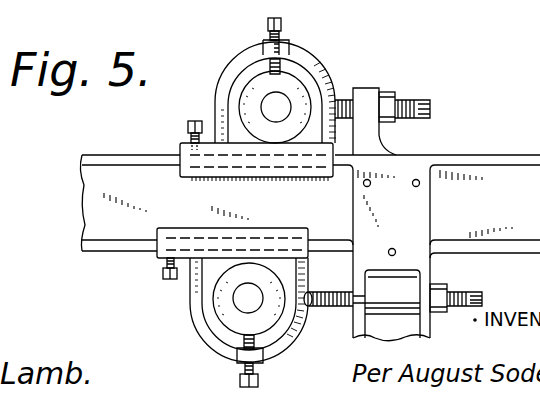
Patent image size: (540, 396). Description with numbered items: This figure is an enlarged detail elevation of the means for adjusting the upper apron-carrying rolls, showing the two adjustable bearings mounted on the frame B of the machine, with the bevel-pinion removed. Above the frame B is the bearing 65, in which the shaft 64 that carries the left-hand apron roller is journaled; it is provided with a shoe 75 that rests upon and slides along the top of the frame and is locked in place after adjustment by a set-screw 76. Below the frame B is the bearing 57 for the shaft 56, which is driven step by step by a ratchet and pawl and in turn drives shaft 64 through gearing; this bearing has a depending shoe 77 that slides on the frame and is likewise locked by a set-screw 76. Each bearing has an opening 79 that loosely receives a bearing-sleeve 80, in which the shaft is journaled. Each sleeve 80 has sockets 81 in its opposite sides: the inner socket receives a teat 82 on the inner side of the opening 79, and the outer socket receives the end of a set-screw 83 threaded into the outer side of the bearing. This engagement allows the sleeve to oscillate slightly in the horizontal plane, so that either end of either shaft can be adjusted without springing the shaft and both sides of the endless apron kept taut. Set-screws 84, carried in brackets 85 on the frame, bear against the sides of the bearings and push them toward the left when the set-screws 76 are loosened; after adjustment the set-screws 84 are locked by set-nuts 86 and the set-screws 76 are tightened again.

The beam B is at (270, 170).
The shoe 75 is at (192, 172).
The shoe 77 is at (158, 246).
The set-screw 76 is at (188, 128).
The bearing 65 is at (225, 78).
The bearing 57 is at (205, 336).
The opening 79 is at (292, 74).
The bearing-sleeve 80 is at (250, 99).
The shaft 64 is at (276, 107).
The shaft 56 is at (248, 298).
The set-screw 83 is at (281, 25).
The socket 81 is at (272, 74).
The teat 82 is at (280, 74).
The set-screw 84 is at (416, 104).
The bracket 85 is at (368, 143).
The set-nut 86 is at (386, 104).